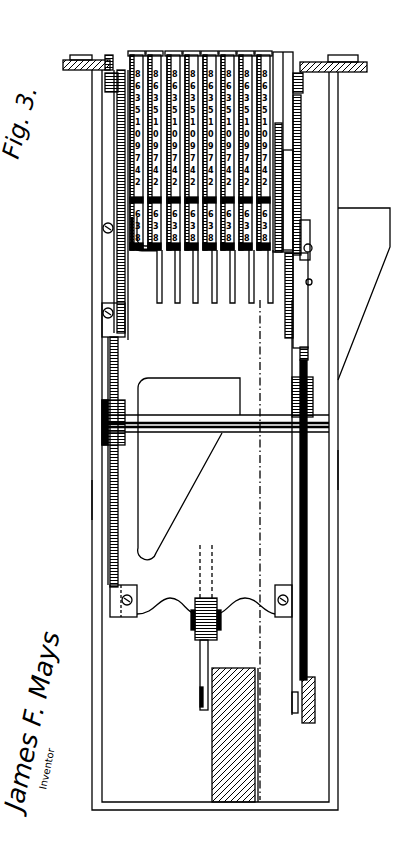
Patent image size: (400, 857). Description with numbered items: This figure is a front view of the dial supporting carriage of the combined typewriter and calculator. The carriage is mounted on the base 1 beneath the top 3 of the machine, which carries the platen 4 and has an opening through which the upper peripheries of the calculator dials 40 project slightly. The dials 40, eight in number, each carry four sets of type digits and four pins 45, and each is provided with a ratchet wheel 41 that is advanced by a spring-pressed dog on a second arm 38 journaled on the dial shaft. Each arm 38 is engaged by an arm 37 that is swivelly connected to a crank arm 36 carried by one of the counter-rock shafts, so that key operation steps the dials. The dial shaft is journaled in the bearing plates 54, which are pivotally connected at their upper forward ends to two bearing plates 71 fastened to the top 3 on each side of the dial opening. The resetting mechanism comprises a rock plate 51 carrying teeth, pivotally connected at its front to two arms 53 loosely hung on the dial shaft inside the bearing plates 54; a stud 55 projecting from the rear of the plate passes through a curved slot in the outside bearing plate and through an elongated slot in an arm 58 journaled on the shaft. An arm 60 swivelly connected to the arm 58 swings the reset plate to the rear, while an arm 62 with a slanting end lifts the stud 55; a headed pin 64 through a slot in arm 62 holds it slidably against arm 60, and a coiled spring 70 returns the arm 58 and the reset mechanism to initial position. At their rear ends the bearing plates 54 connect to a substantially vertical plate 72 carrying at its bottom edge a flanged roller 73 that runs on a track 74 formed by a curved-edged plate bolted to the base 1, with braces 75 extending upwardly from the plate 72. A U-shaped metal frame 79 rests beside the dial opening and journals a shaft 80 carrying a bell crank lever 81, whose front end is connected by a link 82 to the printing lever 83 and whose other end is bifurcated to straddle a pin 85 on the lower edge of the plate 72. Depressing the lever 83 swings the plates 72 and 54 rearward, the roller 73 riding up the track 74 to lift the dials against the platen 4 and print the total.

The base 1 is at (212, 762).
The top 3 is at (246, 73).
The platen 4 is at (265, 735).
The crank arm 36 is at (391, 609).
The arm 37 is at (205, 304).
The second arm 38 is at (176, 52).
The calculator dials 40 is at (208, 52).
The ratchet wheel 41 is at (137, 53).
The pins 45 is at (156, 58).
The rock plate 51 is at (152, 257).
The arms 53 is at (128, 172).
The bearing plates 54 is at (284, 122).
The stud 55 is at (312, 250).
The arm 58 is at (291, 172).
The arm 60 is at (300, 340).
The arm 62 is at (300, 378).
The headed pin 64 is at (312, 283).
The coiled spring 70 is at (305, 150).
The bearing plates 71 is at (113, 62).
The plate 72 is at (197, 486).
The flanged roller 73 is at (198, 641).
The track 74 is at (218, 668).
The braces 75 is at (123, 603).
The U-shaped metal frame 79 is at (91, 490).
The shaft 80 is at (250, 434).
The bell crank lever 81 is at (307, 513).
The link 82 is at (290, 523).
The printing lever 83 is at (315, 698).
The pin 85 is at (108, 613).